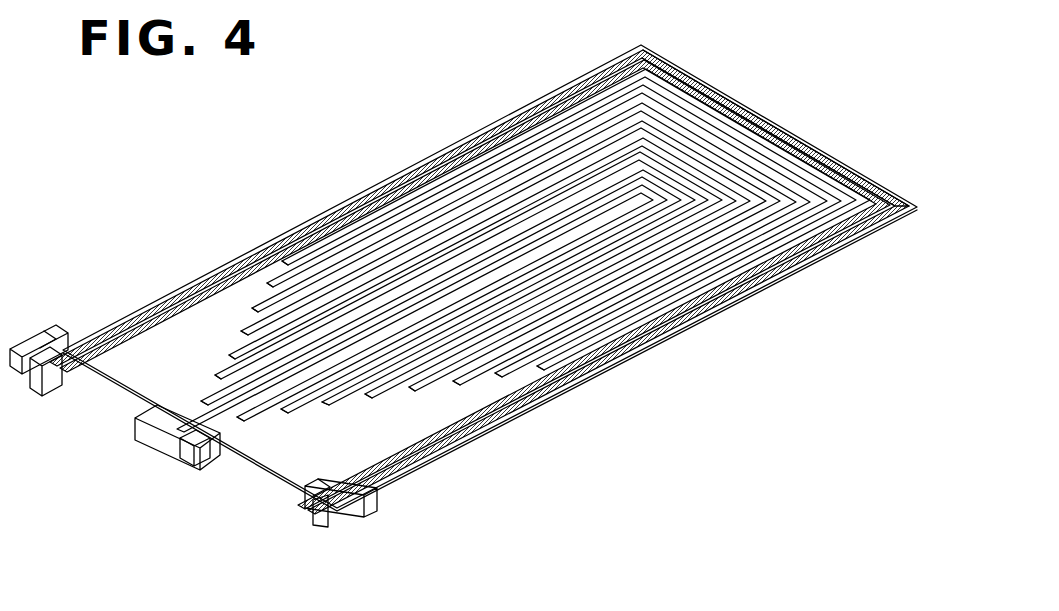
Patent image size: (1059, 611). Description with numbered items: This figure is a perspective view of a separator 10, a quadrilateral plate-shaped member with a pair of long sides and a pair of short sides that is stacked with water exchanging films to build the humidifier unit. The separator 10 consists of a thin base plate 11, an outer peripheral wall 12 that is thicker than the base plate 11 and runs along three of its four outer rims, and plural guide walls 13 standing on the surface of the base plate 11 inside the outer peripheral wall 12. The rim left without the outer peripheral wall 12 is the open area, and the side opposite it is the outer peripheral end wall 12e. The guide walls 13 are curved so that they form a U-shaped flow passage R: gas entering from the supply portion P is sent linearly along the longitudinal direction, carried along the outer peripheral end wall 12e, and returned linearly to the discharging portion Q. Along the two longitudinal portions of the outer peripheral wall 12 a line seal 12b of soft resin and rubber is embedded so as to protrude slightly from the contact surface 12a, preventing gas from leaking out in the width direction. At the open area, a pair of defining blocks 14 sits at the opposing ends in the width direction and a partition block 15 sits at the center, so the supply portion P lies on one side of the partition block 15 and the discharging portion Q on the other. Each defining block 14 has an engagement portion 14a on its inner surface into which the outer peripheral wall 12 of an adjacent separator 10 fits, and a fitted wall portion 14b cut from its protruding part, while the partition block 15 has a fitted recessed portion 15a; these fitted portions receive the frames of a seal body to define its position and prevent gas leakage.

The separator 10 is at (213, 246).
The base plate 11 is at (133, 337).
The outer peripheral wall 12 is at (568, 388).
The contact surface 12a is at (383, 176).
The line seal 12b is at (265, 240).
The outer peripheral end wall 12e is at (778, 130).
The guide wall 13 is at (230, 370).
The defining block 14 is at (32, 335).
The engagement portion 14a is at (95, 345).
The fitted wall portion 14b is at (45, 382).
The partition block 15 is at (187, 414).
The fitted recessed portion 15a is at (163, 440).
The flow passage R is at (481, 181).
The supply portion P is at (236, 467).
The discharging portion Q is at (96, 397).